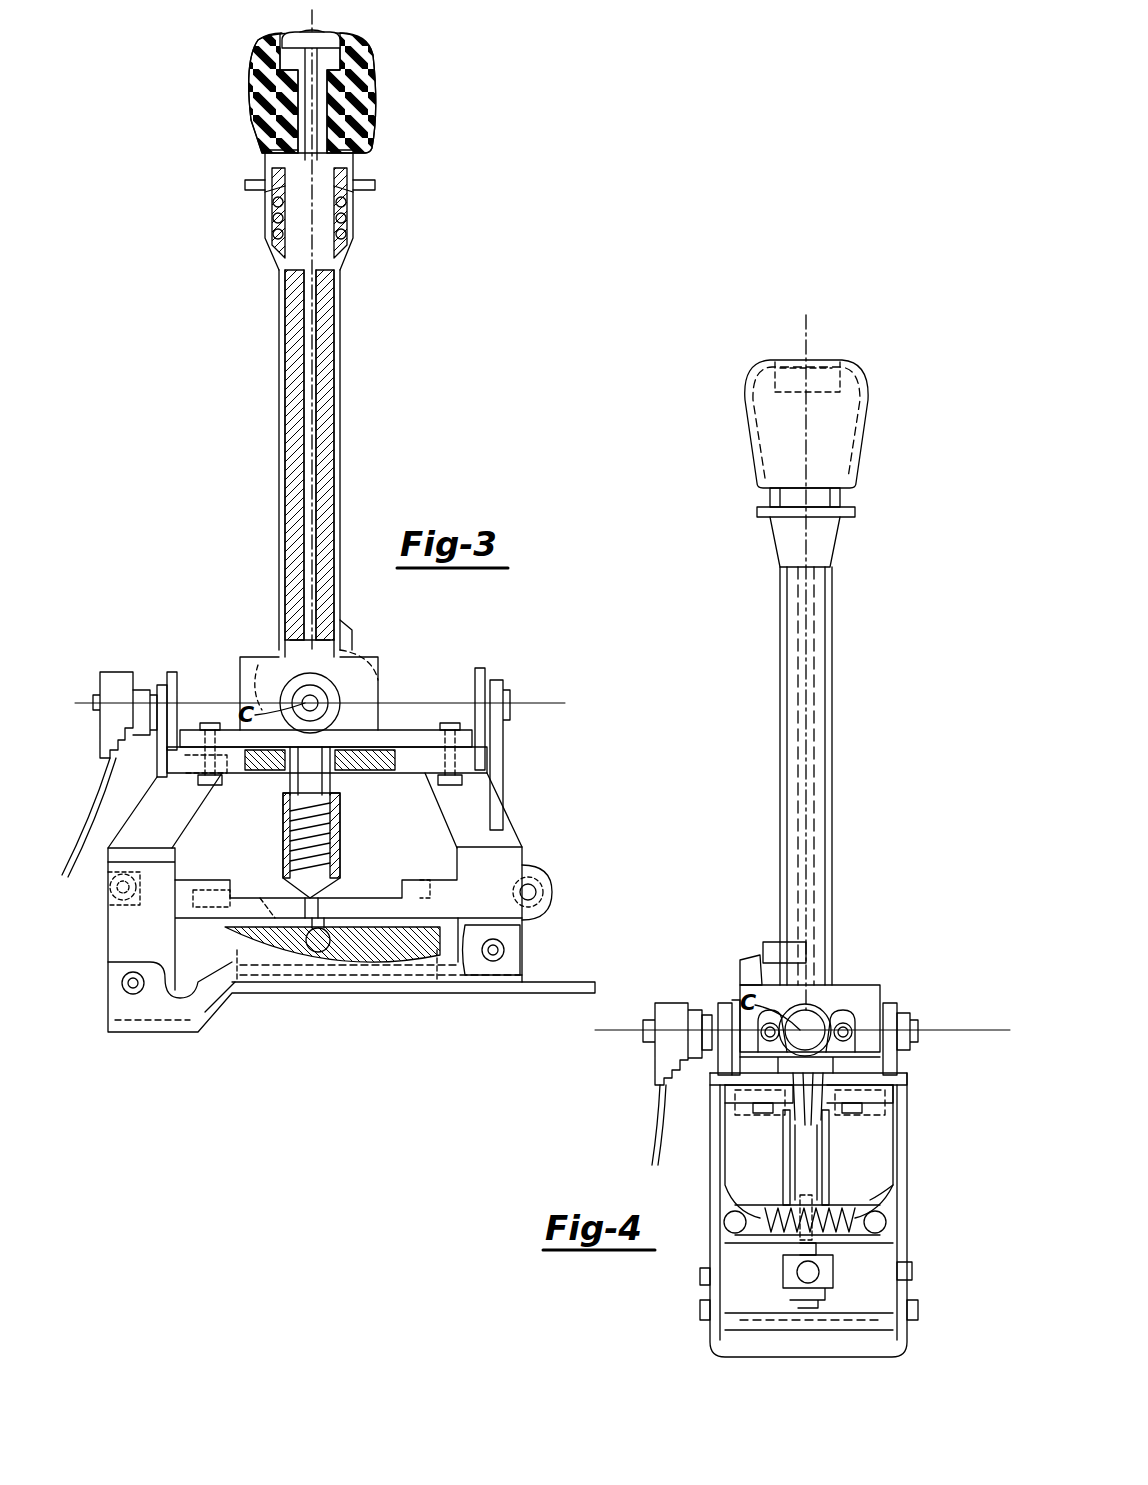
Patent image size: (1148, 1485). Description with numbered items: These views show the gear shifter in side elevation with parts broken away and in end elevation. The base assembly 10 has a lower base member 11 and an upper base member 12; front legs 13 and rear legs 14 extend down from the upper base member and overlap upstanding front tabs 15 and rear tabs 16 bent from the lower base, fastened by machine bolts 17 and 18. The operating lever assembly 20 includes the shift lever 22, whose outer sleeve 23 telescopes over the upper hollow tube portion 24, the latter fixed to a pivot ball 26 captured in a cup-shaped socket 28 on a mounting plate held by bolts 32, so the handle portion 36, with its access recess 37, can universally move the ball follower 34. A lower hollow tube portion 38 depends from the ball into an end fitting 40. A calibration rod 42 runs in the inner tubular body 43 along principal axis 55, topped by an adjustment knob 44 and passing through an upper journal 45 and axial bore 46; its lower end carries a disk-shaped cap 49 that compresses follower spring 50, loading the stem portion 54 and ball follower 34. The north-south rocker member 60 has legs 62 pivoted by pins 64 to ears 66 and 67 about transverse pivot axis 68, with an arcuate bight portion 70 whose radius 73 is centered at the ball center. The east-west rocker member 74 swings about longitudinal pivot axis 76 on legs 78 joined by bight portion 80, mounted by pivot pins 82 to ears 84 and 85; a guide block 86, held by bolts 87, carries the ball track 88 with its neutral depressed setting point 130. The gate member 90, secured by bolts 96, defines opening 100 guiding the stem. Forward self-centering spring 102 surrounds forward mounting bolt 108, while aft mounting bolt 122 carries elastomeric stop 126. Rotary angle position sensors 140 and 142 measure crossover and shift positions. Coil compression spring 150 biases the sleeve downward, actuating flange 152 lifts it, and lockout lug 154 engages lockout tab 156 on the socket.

In FIG. 3, the base assembly 10 is at (425, 626).
In FIG. 4, the base assembly 10 is at (910, 1172).
In FIG. 3, the lower base member 11 is at (492, 996).
In FIG. 4, the lower base member 11 is at (915, 1290).
In FIG. 3, the upper base member 12 is at (522, 812).
In FIG. 4, the upper base member 12 is at (910, 1137).
In FIG. 3, the front legs 13 is at (120, 952).
In FIG. 4, the front legs 13 is at (725, 1222).
In FIG. 3, the rear legs 14 is at (505, 836).
In FIG. 3, the front tabs 15 is at (125, 988).
In FIG. 4, the front tabs 15 is at (705, 1300).
In FIG. 3, the rear tabs 16 is at (540, 967).
In FIG. 4, the rear tabs 16 is at (720, 1255).
In FIG. 3, the machine bolts 17 is at (115, 1022).
In FIG. 4, the machine bolts 17 is at (705, 1330).
In FIG. 3, the machine bolts 18 is at (505, 950).
In FIG. 4, the machine bolts 18 is at (708, 1272).
In FIG. 3, the operating lever assembly 20 is at (357, 356).
In FIG. 4, the operating lever assembly 20 is at (864, 756).
In FIG. 3, the shift lever 22 is at (342, 432).
In FIG. 4, the shift lever 22 is at (836, 830).
In FIG. 3, the outer sleeve 23 is at (336, 388).
In FIG. 4, the outer sleeve 23 is at (822, 720).
In FIG. 3, the upper hollow tube portion 24 is at (332, 655).
In FIG. 4, the upper hollow tube portion 24 is at (825, 975).
In FIG. 3, the pivot ball 26 is at (370, 665).
In FIG. 3, the cup-shaped socket 28 is at (258, 680).
In FIG. 4, the cup-shaped socket 28 is at (880, 990).
In FIG. 3, the bolts 32 is at (208, 723).
In FIG. 3, the ball follower 34 is at (318, 952).
In FIG. 3, the handle portion 36 is at (355, 105).
In FIG. 4, the handle portion 36 is at (868, 432).
In FIG. 3, the access recess 37 is at (340, 36).
In FIG. 4, the access recess 37 is at (775, 362).
In FIG. 3, the lower hollow tube portion 38 is at (300, 780).
In FIG. 4, the lower hollow tube portion 38 is at (740, 1195).
In FIG. 3, the end fitting 40 is at (340, 828).
In FIG. 4, the end fitting 40 is at (838, 1158).
In FIG. 3, the calibration rod 42 is at (320, 318).
In FIG. 4, the calibration rod 42 is at (822, 660).
In FIG. 3, the inner tubular body 43 is at (322, 463).
In FIG. 3, the manual adjustment knob 44 is at (318, 28).
In FIG. 4, the manual adjustment knob 44 is at (822, 360).
In FIG. 3, the upper journal 45 is at (350, 180).
In FIG. 3, the axial bore 46 is at (350, 716).
In FIG. 3, the disk-shaped cap 49 is at (322, 797).
In FIG. 3, the follower spring 50 is at (320, 850).
In FIG. 3, the stem portion 54 is at (288, 870).
In FIG. 3, the principal axis 55 is at (312, 497).
In FIG. 4, the principal axis 55 is at (820, 333).
In FIG. 4, the north-south rocker member 60 is at (866, 1198).
In FIG. 4, the legs 62 is at (900, 1055).
In FIG. 3, the pins 64 is at (300, 690).
In FIG. 4, the pins 64 is at (918, 1030).
In FIG. 3, the ear 66 is at (345, 705).
In FIG. 4, the ear 66 is at (898, 1020).
In FIG. 4, the ear 67 is at (725, 1003).
In FIG. 4, the transverse pivot axis 68 is at (648, 1040).
In FIG. 4, the bight portion 70 is at (770, 1205).
In FIG. 4, the radius 73 is at (735, 1153).
In FIG. 3, the east-west rocker member 74 is at (505, 792).
In FIG. 3, the longitudinal pivot axis 76 is at (530, 700).
In FIG. 3, the legs 78 is at (157, 750).
In FIG. 3, the bight portion 80 is at (210, 990).
In FIG. 3, the pivot pins 82 is at (175, 690).
In FIG. 3, the ear 84 is at (495, 680).
In FIG. 3, the ear 85 is at (170, 672).
In FIG. 4, the ear 85 is at (845, 1010).
In FIG. 3, the guide block 86 is at (462, 938).
In FIG. 4, the guide block 86 is at (836, 1284).
In FIG. 3, the bolts 87 is at (238, 985).
In FIG. 3, the ball track 88 is at (392, 965).
In FIG. 3, the gate member 90 is at (395, 870).
In FIG. 4, the gate member 90 is at (880, 1258).
In FIG. 3, the bolts 96 is at (426, 865).
In FIG. 4, the bolts 96 is at (886, 1224).
In FIG. 3, the opening 100 is at (300, 905).
In FIG. 4, the forward self-centering spring 102 is at (803, 1200).
In FIG. 3, the forward mounting bolt 108 is at (120, 905).
In FIG. 4, the forward mounting bolt 108 is at (872, 1207).
In FIG. 3, the aft mounting bolt 122 is at (552, 880).
In FIG. 4, the elastomeric stop 126 is at (728, 1215).
In FIG. 3, the neutral depressed setting point 130 is at (340, 950).
In FIG. 3, the rotary angle position sensor 140 is at (112, 672).
In FIG. 4, the rotary angle position sensor 142 is at (670, 1003).
In FIG. 3, the coil compression spring 150 is at (347, 215).
In FIG. 3, the actuating flange 152 is at (356, 198).
In FIG. 4, the actuating flange 152 is at (858, 512).
In FIG. 4, the lockout lug 154 is at (775, 942).
In FIG. 3, the lockout tab 156 is at (348, 628).
In FIG. 4, the lockout tab 156 is at (752, 965).